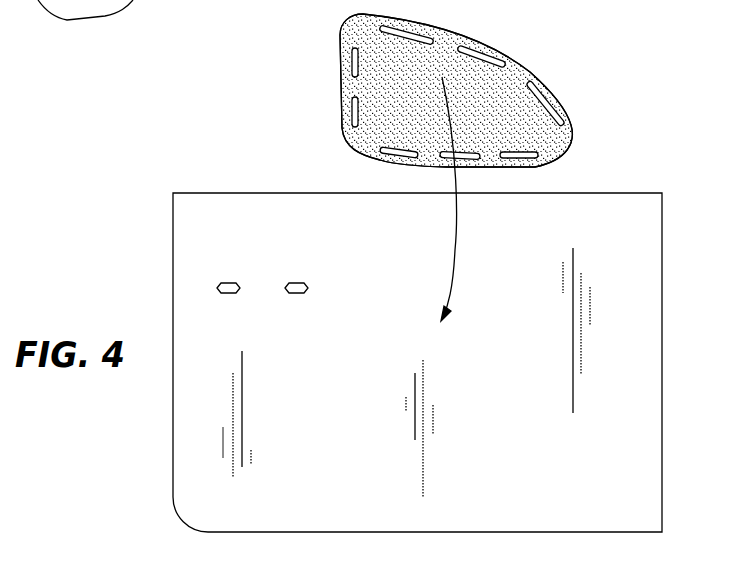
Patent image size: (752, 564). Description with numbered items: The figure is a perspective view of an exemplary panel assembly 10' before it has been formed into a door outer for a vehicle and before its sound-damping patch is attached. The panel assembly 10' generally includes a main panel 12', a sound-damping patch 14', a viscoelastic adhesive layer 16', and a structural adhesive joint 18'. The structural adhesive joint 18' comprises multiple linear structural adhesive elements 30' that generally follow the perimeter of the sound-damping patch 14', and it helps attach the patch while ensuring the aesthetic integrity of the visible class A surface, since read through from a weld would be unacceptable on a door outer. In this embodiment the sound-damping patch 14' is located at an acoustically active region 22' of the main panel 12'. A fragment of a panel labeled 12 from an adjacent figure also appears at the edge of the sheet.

The panel assembly 10' is at (366, 362).
The main panel 12' is at (434, 362).
The sound-damping patch 14' is at (450, 85).
The viscoelastic adhesive layer 16' is at (464, 90).
The structural adhesive joint 18' is at (472, 65).
The acoustically active region 22' is at (473, 416).
The linear structural adhesive elements 30' is at (322, 87).
The cushion panel 12 is at (117, 18).